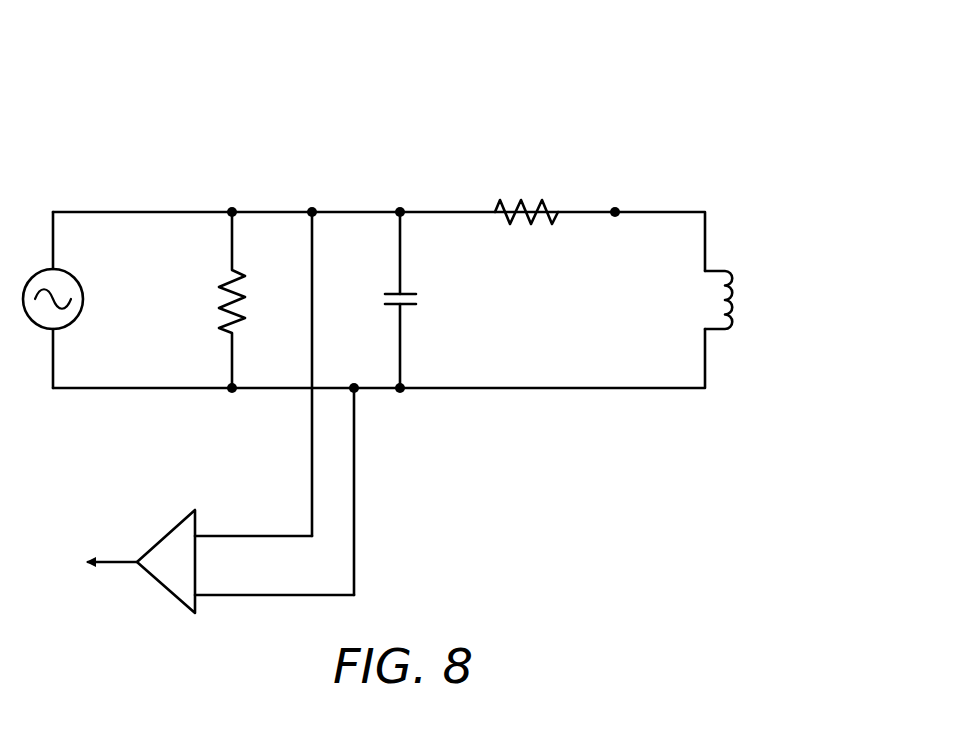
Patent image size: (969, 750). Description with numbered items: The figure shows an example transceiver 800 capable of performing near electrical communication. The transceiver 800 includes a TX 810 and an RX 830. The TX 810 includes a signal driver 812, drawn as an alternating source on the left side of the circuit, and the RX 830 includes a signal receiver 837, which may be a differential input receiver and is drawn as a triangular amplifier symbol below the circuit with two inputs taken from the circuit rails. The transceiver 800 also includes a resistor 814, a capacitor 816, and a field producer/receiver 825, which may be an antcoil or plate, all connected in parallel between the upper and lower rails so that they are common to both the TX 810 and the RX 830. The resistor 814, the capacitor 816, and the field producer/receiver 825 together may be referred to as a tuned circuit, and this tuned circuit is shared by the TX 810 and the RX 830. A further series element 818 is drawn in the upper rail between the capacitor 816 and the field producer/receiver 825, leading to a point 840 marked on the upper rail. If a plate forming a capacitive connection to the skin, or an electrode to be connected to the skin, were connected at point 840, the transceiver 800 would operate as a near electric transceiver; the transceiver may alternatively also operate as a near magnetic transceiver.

The transceiver 800 is at (100, 72).
The TX 810 is at (183, 149).
The signal driver 812 is at (72, 272).
The resistor 814 is at (238, 290).
The capacitor 816 is at (408, 292).
The resistor 818 is at (535, 196).
The field producer/receiver 825 is at (727, 293).
The RX 830 is at (240, 496).
The signal receiver 837 is at (167, 591).
The point 840 is at (615, 205).